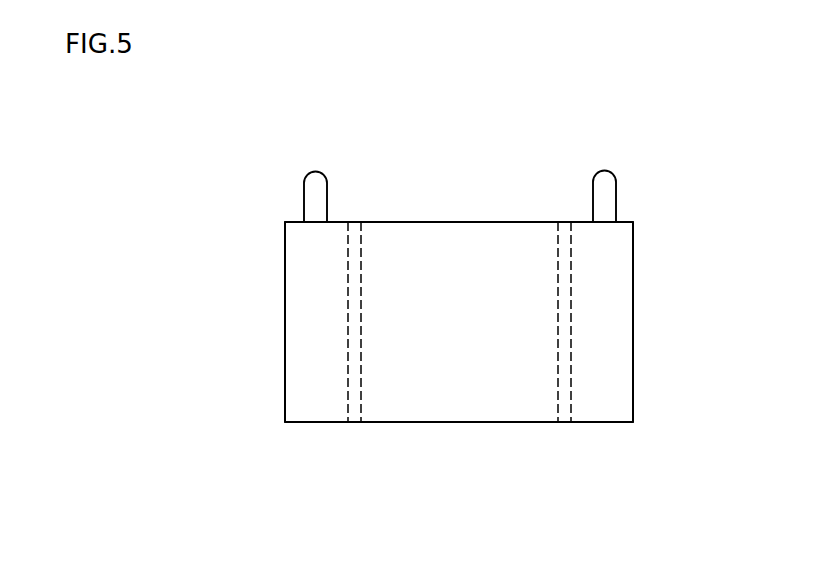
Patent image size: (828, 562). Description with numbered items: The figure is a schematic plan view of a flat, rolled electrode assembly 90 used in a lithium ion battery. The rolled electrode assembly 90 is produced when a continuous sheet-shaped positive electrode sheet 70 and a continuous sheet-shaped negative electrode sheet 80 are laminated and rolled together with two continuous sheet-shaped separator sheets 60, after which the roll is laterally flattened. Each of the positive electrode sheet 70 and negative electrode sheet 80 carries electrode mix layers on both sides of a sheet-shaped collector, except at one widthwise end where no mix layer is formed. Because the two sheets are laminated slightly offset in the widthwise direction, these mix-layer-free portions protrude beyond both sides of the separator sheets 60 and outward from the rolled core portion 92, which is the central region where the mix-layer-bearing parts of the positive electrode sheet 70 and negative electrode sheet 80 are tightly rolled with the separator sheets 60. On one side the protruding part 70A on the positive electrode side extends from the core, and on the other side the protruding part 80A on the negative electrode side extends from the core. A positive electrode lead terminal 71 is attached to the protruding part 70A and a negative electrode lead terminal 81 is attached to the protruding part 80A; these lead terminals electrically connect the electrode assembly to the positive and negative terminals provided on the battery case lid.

The rolled electrode assembly 90 is at (448, 178).
The separator sheet 60 is at (507, 222).
The rolled core portion 92 is at (503, 415).
The negative electrode sheet 80 is at (285, 367).
The protruding part on the negative electrode side 80A is at (292, 288).
The positive electrode sheet 70 is at (633, 367).
The protruding part on the positive electrode side 70A is at (627, 290).
The negative electrode lead terminal 81 is at (313, 176).
The positive electrode lead terminal 71 is at (604, 176).